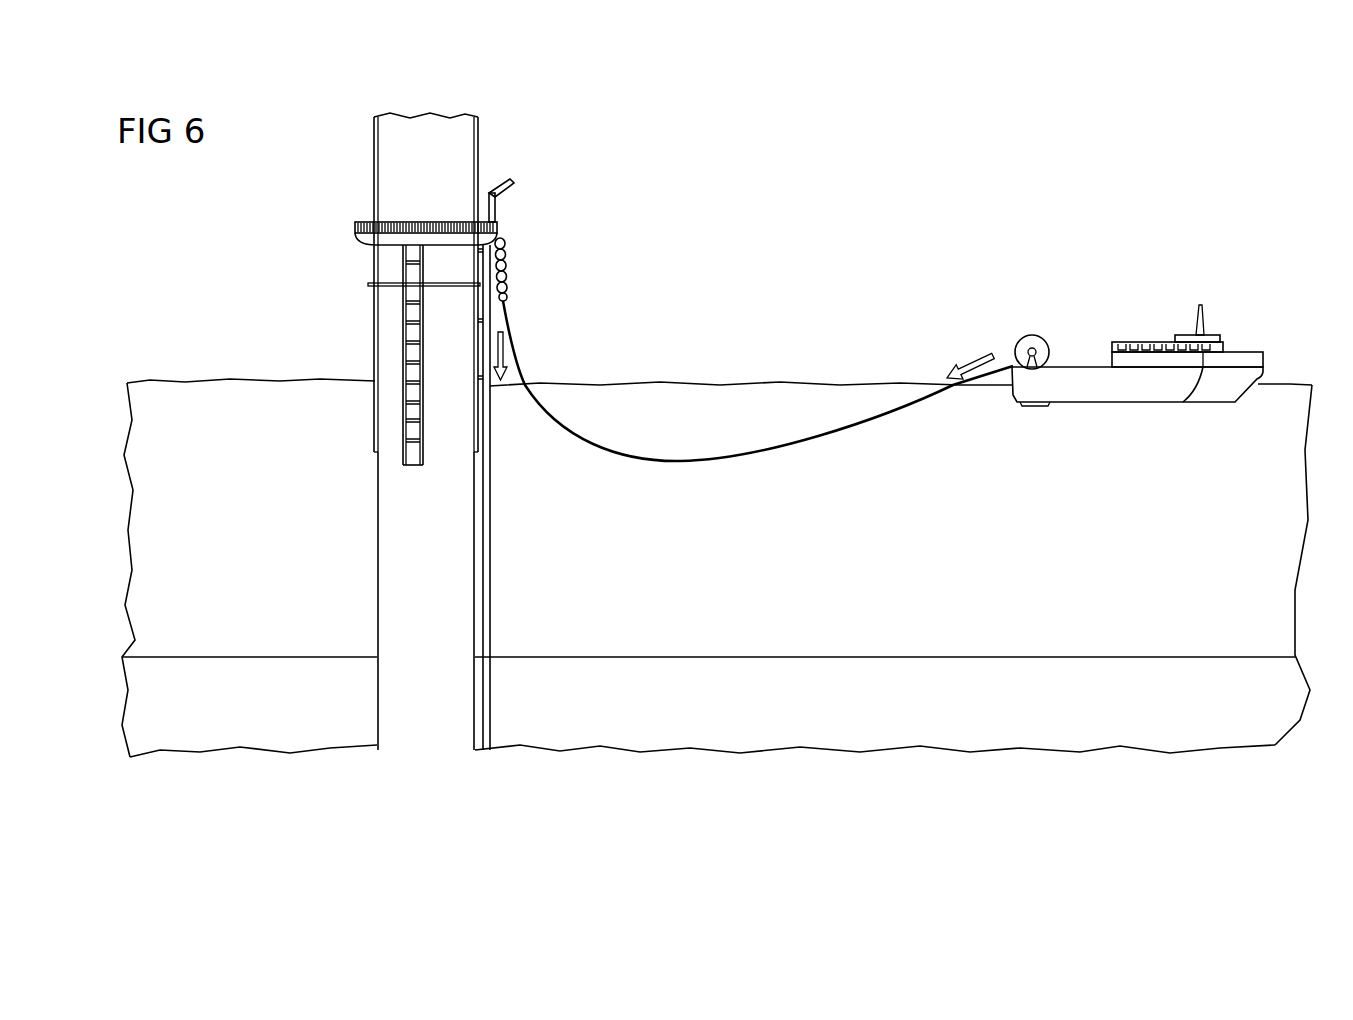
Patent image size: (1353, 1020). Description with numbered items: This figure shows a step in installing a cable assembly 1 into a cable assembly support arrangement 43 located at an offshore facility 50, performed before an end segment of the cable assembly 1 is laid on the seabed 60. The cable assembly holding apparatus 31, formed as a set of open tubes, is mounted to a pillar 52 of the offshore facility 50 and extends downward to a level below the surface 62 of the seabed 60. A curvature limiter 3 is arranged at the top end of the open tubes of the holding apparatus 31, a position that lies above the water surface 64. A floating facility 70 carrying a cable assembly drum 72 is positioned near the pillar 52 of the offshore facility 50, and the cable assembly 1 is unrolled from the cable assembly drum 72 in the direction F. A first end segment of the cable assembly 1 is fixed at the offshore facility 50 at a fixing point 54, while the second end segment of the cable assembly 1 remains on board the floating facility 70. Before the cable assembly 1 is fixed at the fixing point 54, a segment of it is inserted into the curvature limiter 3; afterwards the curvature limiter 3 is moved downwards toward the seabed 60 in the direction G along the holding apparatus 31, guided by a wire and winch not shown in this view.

The cable assembly 1 is at (722, 462).
The curvature limiter 3 is at (506, 283).
The cable assembly holding apparatus 31 is at (488, 551).
The cable assembly support arrangement 43 is at (551, 241).
The offshore facility 50 is at (393, 431).
The pillar 52 is at (467, 697).
The fixing point 54 is at (502, 242).
The seabed 60 is at (1228, 745).
The surface of the seabed 62 is at (1242, 655).
The water surface 64 is at (1276, 383).
The floating facility 70 is at (1136, 343).
The cable assembly drum 72 is at (1032, 345).
The unrolling direction F is at (976, 360).
The downward direction G is at (507, 348).